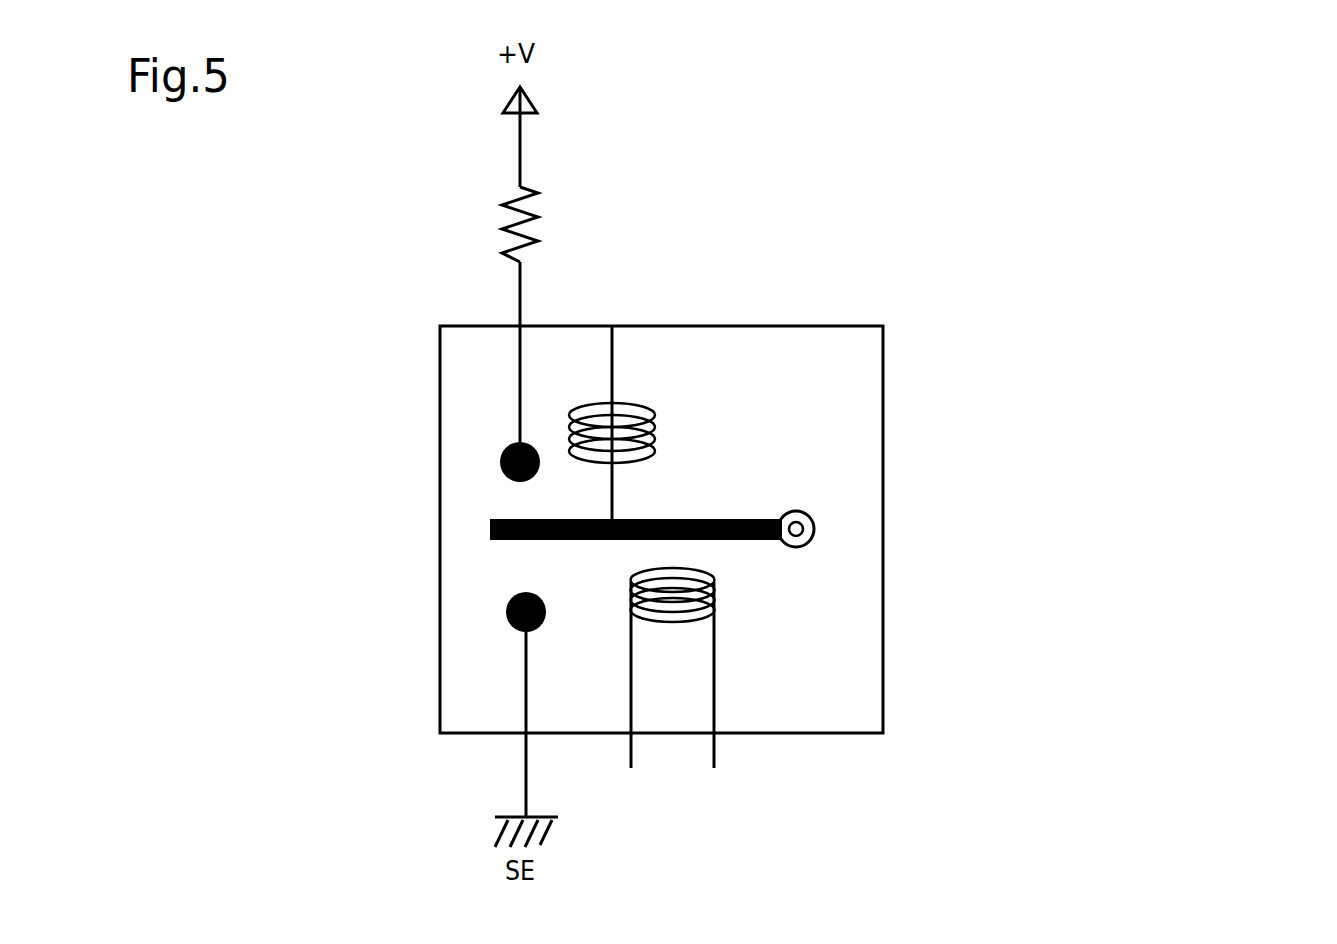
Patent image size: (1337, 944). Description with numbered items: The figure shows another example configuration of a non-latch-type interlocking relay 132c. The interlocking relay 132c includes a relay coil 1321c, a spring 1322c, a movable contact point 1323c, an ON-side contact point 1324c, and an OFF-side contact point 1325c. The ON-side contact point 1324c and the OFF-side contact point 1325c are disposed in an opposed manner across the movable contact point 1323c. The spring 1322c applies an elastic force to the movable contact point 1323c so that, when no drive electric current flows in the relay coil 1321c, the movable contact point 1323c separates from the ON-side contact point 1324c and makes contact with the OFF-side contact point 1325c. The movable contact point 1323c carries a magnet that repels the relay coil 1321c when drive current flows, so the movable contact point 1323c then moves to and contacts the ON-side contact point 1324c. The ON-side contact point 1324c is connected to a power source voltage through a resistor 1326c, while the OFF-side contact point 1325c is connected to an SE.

The interlocking relay 132c is at (885, 369).
The relay coil 1321c is at (680, 625).
The spring 1322c is at (641, 402).
The movable contact point 1323c is at (755, 519).
The ON-side contact point 1324c is at (503, 468).
The OFF-side contact point 1325c is at (507, 625).
The resistor 1326c is at (500, 220).